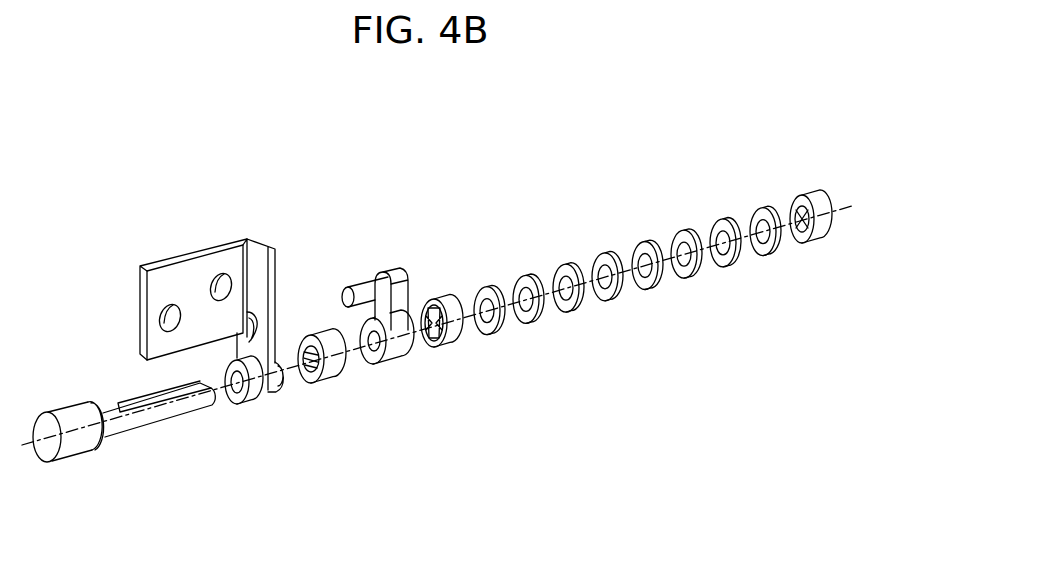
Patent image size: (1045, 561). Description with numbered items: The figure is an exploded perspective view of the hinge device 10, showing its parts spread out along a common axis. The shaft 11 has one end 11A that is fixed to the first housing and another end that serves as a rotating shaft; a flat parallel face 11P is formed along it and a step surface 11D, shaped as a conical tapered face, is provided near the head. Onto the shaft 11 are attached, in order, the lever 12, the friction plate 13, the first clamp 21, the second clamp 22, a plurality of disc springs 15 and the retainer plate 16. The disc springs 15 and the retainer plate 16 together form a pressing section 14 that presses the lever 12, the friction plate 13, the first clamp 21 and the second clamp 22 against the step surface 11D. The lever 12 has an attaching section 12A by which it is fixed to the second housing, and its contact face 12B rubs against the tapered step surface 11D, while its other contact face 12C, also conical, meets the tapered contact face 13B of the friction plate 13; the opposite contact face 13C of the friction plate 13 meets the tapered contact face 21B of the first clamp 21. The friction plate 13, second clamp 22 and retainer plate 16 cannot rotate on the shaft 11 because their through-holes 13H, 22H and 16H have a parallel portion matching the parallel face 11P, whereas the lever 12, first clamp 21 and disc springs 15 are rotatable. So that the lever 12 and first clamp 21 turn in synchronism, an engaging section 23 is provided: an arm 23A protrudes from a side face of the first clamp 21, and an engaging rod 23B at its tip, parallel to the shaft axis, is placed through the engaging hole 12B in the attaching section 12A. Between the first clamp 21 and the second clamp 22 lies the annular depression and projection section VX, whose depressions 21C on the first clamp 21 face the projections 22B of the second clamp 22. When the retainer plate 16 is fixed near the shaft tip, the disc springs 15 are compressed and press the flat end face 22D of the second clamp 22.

The hinge device 10 is at (668, 128).
The shaft 11 is at (123, 429).
The one end of the shaft 11A is at (70, 448).
The step surface 11D is at (105, 438).
The parallel face 11P is at (140, 405).
The lever 12 is at (213, 334).
The attaching section 12A is at (177, 258).
The engaging hole / contact face 12B is at (255, 322).
The contact face of the lever 12C is at (279, 373).
The friction plate 13 is at (339, 369).
The contact face of the friction plate 13B is at (312, 383).
The contact face of the friction plate 13C is at (346, 364).
The through-hole 13H is at (311, 355).
The first clamp 21 is at (416, 373).
The contact face of the first clamp / projections 21B is at (377, 365).
The depressions 21C is at (410, 342).
The engaging section 23 is at (389, 226).
The arm 23A is at (400, 287).
The engaging rod 23B is at (358, 292).
The second clamp 22 is at (478, 289).
The projections 22B is at (456, 310).
The end face of the second clamp 22D is at (432, 304).
The hole 22H is at (428, 310).
The depression and projection section VX is at (445, 355).
The pressing section 14 is at (653, 276).
The disc springs 15 is at (478, 340).
The retainer plate 16 is at (782, 256).
The through-hole 16H is at (796, 216).